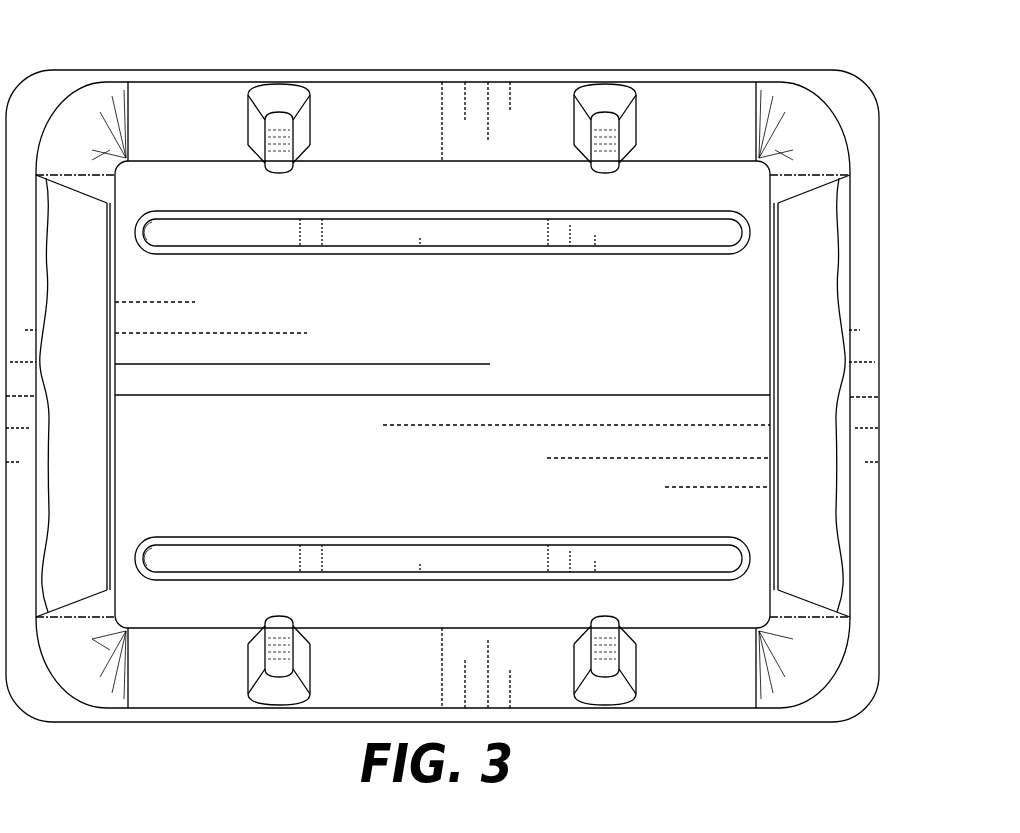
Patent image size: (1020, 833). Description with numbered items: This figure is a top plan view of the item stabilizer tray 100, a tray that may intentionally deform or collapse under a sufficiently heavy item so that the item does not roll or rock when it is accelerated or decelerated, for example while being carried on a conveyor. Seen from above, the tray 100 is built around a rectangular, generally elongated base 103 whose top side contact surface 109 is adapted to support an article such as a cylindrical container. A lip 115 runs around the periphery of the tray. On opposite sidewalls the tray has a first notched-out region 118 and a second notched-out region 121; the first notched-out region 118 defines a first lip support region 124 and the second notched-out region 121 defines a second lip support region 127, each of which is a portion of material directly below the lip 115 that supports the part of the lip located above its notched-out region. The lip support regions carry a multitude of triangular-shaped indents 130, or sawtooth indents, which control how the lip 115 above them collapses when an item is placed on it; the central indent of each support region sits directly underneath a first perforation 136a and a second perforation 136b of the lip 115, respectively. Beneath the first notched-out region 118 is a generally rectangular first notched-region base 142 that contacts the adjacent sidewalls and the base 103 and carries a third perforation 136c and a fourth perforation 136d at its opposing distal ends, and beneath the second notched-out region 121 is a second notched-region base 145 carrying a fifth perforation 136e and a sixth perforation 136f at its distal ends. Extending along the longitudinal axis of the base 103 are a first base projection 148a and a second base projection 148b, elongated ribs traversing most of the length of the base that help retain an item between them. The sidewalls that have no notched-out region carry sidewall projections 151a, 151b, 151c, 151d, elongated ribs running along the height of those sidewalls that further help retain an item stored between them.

The item stabilizer tray 100 is at (851, 737).
The base 103 is at (425, 355).
The top side contact surface 109 is at (442, 355).
The lip 115 is at (37, 71).
The first notched-out region 118 is at (806, 469).
The second notched-out region 121 is at (76, 472).
The first lip support region 124 is at (842, 322).
The second lip support region 127 is at (42, 316).
The triangular-shaped indents 130 is at (49, 529).
The first perforation 136a is at (850, 397).
The second perforation 136b is at (36, 396).
The third perforation 136c is at (770, 590).
The fourth perforation 136d is at (770, 203).
The fifth perforation 136e is at (115, 590).
The sixth perforation 136f is at (115, 203).
The first notched-region base 142 is at (770, 371).
The second notched-region base 145 is at (113, 455).
The first base projection 148a is at (702, 256).
The second base projection 148b is at (312, 538).
The sidewall projection 151a is at (280, 100).
The sidewall projection 151b is at (606, 100).
The sidewall projection 151c is at (280, 694).
The sidewall projection 151d is at (606, 690).